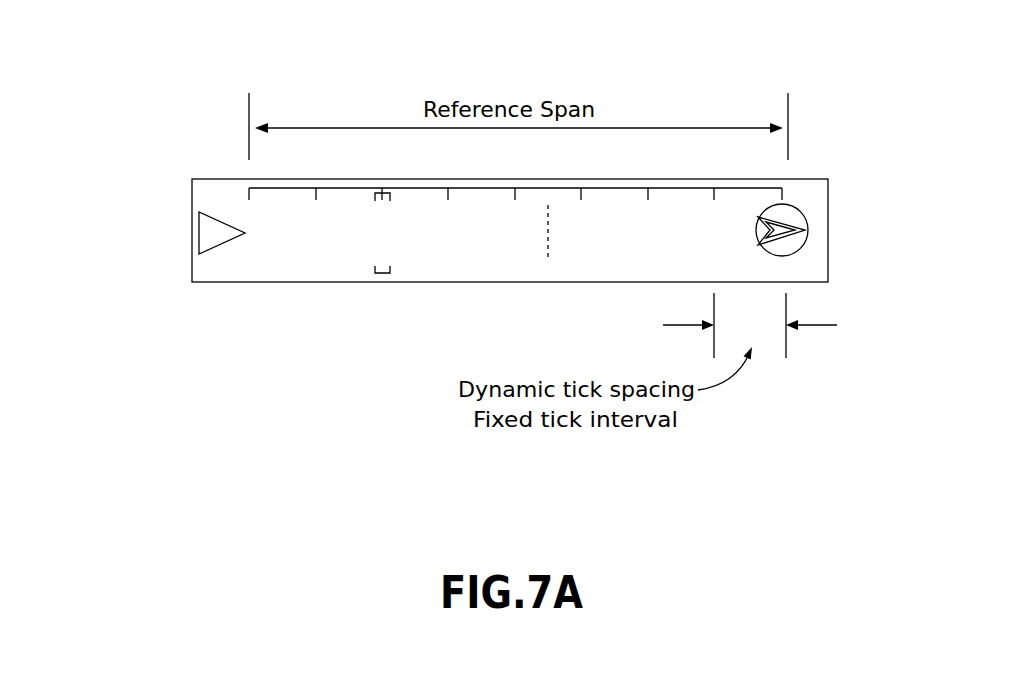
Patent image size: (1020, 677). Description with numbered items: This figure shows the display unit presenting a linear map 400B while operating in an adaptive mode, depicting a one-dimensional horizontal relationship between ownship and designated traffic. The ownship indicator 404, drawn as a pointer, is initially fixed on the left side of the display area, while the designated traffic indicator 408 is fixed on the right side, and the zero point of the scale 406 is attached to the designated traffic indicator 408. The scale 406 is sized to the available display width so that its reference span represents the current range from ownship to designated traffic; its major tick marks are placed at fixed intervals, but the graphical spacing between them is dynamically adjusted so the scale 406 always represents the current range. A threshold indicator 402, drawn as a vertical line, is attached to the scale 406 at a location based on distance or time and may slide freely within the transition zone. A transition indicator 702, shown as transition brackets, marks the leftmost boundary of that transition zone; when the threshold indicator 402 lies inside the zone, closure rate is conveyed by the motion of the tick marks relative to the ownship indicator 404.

The linear map 400B is at (160, 64).
The threshold indicator 402 is at (547, 240).
The ownship indicator 404 is at (200, 232).
The scale 406 is at (268, 187).
The designated traffic indicator 408 is at (802, 213).
The transition indicator 702 is at (375, 197).